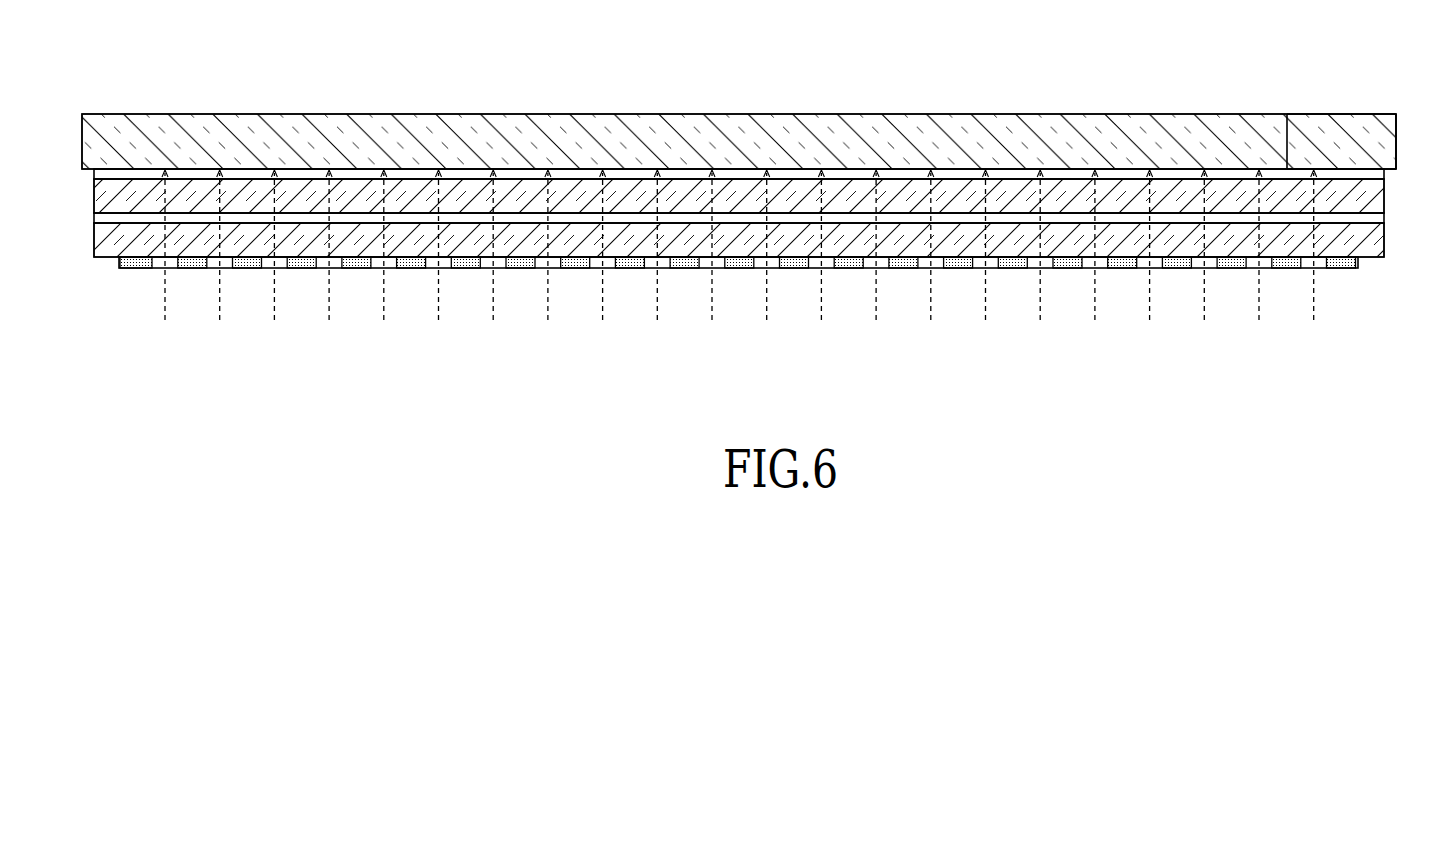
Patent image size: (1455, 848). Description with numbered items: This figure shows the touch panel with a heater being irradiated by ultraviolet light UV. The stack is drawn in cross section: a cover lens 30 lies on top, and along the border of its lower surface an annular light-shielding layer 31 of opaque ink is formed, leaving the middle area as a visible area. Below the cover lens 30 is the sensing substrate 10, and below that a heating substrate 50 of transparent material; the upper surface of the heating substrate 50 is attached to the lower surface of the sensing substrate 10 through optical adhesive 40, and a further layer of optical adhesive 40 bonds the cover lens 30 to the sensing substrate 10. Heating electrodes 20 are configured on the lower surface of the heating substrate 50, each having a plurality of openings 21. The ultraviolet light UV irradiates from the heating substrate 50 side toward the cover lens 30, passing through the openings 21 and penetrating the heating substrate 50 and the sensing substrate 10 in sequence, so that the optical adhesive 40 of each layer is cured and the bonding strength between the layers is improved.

The sensing substrate 10 is at (1370, 192).
The heating electrode 20 is at (1343, 268).
The openings 21 is at (1253, 265).
The cover lens 30 is at (1193, 120).
The light-shielding layer 31 is at (1287, 168).
The optical adhesive 40 is at (1378, 176).
The heating substrate 50 is at (1372, 243).
The ultraviolet light UV is at (930, 303).